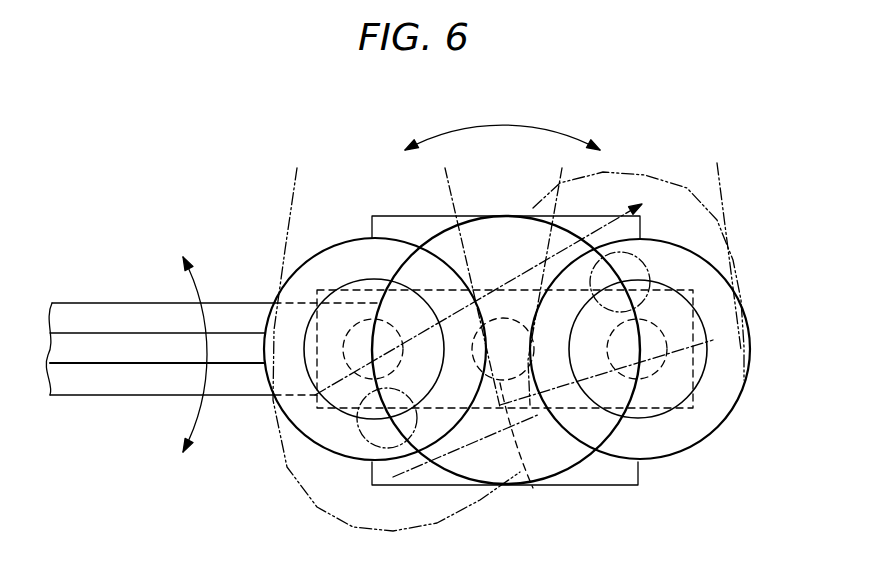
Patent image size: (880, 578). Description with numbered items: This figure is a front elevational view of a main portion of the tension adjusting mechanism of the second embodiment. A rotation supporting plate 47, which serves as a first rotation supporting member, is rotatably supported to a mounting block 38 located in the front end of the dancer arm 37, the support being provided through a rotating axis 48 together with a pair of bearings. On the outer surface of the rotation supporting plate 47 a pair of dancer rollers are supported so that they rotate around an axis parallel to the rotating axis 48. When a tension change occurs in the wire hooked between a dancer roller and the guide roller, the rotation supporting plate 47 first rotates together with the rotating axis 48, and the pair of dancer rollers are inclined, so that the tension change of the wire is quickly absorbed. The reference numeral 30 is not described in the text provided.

The carrier 30 is at (371, 214).
The dancer arm 37 is at (76, 302).
The mounting block 38 is at (627, 218).
The rotation supporting plate 47 is at (505, 316).
The rotating axis 48 is at (533, 486).